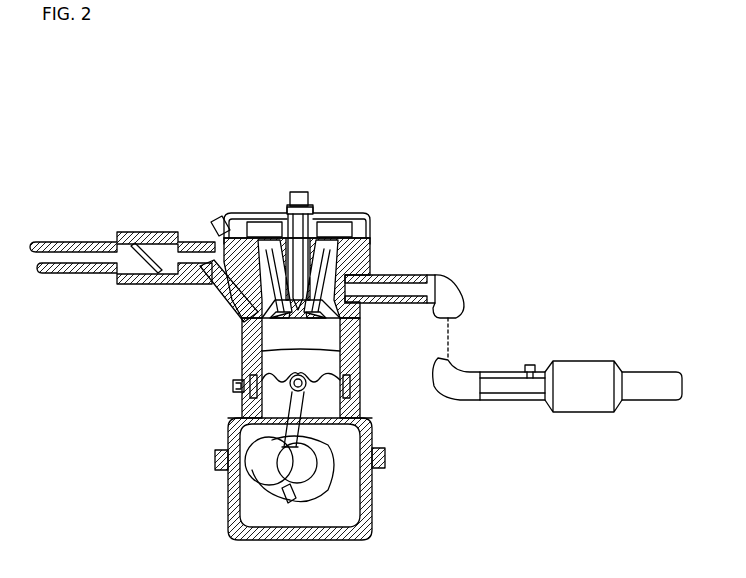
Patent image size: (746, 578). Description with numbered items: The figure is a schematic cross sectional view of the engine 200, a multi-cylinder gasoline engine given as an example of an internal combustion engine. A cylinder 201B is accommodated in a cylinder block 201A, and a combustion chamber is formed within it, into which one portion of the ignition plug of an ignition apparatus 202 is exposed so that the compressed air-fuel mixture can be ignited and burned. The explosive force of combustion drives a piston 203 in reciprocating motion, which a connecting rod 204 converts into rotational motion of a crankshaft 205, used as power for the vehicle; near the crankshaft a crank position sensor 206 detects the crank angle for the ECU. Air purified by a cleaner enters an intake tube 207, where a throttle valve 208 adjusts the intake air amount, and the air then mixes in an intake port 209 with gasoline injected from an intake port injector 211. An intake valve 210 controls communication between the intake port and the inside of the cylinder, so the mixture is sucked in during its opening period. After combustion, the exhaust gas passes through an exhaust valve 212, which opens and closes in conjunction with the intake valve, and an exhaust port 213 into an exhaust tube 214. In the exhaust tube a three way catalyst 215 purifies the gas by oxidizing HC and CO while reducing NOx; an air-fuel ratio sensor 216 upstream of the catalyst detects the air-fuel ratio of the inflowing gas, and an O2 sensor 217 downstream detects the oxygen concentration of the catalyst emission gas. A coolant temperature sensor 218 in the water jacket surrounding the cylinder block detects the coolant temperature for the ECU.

The engine 200 is at (99, 100).
The cylinder block 201A is at (372, 420).
The cylinder 201B is at (227, 410).
The ignition apparatus 202 is at (305, 195).
The piston 203 is at (358, 362).
The connecting rod 204 is at (230, 447).
The crankshaft 205 is at (303, 468).
The crank position sensor 206 is at (285, 495).
The intake tube 207 is at (92, 257).
The throttle valve 208 is at (153, 268).
The intake port 209 is at (233, 310).
The intake valve 210 is at (242, 338).
The intake port injector 211 is at (225, 228).
The exhaust valve 212 is at (368, 320).
The exhaust port 213 is at (392, 288).
The exhaust tube 214 is at (452, 305).
The three way catalyst 215 is at (577, 362).
The air-fuel ratio sensor 216 is at (529, 368).
The O2 sensor 217 is at (643, 372).
The coolant temperature sensor 218 is at (233, 386).